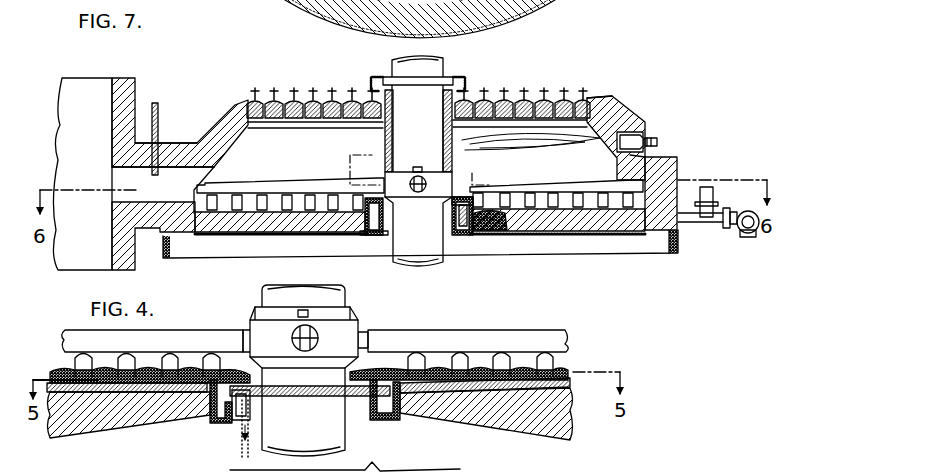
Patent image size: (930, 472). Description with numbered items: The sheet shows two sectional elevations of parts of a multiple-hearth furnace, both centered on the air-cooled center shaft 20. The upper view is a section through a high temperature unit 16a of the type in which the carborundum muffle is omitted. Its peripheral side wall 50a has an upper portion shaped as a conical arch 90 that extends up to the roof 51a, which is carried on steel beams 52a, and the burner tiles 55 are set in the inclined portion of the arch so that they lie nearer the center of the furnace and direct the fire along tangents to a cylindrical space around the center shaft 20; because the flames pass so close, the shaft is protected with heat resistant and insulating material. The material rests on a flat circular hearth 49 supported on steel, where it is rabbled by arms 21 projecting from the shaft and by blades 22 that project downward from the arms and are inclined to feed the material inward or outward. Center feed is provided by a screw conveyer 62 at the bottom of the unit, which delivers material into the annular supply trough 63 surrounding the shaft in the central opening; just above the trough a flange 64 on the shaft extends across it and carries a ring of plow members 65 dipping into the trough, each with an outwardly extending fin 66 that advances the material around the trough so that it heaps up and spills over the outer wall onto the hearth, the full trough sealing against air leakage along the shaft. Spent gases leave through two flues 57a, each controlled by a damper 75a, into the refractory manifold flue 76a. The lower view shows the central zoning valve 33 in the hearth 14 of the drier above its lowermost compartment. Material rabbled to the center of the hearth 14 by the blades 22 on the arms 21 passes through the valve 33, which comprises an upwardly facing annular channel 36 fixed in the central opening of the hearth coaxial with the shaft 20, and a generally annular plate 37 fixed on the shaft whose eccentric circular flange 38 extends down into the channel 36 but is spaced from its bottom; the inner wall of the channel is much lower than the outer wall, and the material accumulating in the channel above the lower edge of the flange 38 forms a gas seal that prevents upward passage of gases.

In FIG. 7, the manifold flue 76a is at (98, 95).
In FIG. 7, the damper 75a is at (158, 102).
In FIG. 7, the conical arch 90 is at (222, 122).
In FIG. 7, the flue 57a is at (170, 180).
In FIG. 7, the roof 51a is at (547, 112).
In FIG. 7, the steel beams 52a is at (501, 89).
In FIG. 7, the arms 21 is at (300, 186).
In FIG. 4, the arms 21 is at (517, 333).
In FIG. 7, the blades 22 is at (283, 203).
In FIG. 4, the blades 22 is at (463, 360).
In FIG. 7, the hearth 49 is at (590, 212).
In FIG. 7, the center shaft 20 is at (428, 247).
In FIG. 4, the center shaft 20 is at (337, 295).
In FIG. 7, the supply trough 63 is at (380, 237).
In FIG. 7, the flange 64 is at (460, 207).
In FIG. 7, the plow members 65 is at (465, 202).
In FIG. 7, the fin 66 is at (463, 227).
In FIG. 7, the screw conveyer 62 is at (495, 233).
In FIG. 7, the high temperature unit 16a is at (622, 102).
In FIG. 7, the burner tiles 55 is at (645, 133).
In FIG. 7, the side wall 50a is at (668, 192).
In FIG. 4, the plate 37 is at (245, 390).
In FIG. 4, the flange 38 is at (227, 387).
In FIG. 4, the annular channel 36 is at (230, 422).
In FIG. 4, the valve 33 is at (402, 421).
In FIG. 4, the hearth 14 is at (500, 430).